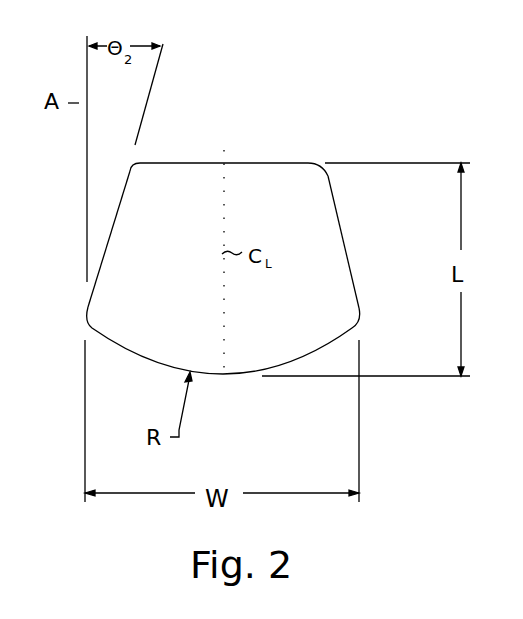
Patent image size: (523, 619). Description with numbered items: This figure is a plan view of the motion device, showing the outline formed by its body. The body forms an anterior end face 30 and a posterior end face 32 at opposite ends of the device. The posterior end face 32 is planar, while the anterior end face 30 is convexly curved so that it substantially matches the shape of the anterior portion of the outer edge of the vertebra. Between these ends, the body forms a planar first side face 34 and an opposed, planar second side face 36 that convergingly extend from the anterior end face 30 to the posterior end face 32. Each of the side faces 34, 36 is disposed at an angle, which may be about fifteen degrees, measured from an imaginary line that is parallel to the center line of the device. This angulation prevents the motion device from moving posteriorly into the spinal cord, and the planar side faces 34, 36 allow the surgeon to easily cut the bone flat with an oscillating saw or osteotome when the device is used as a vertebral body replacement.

The anterior end face 30 is at (137, 362).
The posterior end face 32 is at (244, 162).
The first side face 34 is at (115, 211).
The second side face 36 is at (337, 216).